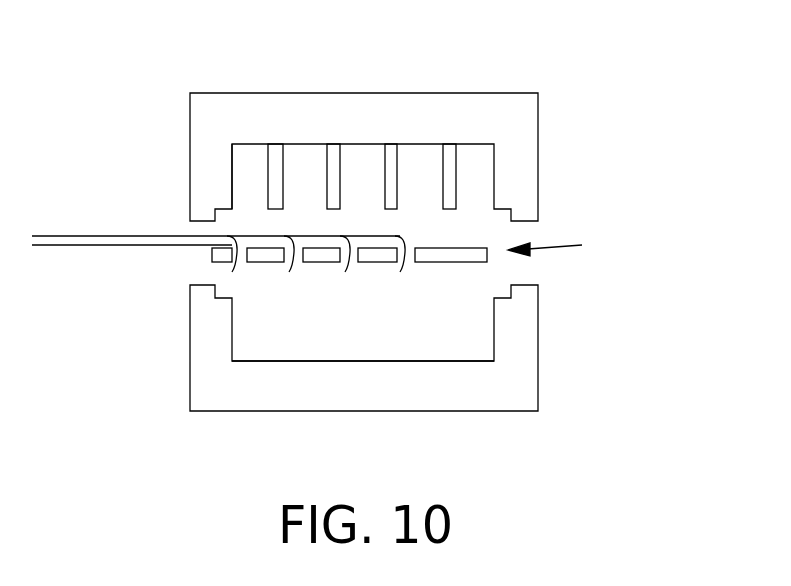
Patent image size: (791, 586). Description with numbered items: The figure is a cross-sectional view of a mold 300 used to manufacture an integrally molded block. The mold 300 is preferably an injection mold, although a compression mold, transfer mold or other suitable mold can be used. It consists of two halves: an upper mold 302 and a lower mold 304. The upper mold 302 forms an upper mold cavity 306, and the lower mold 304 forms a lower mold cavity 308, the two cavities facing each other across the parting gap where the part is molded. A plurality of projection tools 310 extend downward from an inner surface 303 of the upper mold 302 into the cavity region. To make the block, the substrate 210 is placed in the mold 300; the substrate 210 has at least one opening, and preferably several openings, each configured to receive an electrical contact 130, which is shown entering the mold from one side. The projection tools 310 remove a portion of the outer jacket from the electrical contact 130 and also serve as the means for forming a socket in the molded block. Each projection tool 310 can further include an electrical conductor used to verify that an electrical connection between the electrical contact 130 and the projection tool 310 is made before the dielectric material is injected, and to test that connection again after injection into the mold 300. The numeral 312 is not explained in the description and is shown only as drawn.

The mold 300 is at (562, 78).
The upper mold 302 is at (538, 157).
The lower mold 304 is at (538, 335).
The inner surface 303 is at (362, 143).
The upper mold cavity 306 is at (478, 160).
The lower mold cavity 308 is at (413, 337).
The projection tool 310 is at (265, 143).
The inner wall 312 is at (268, 182).
The substrate 210 is at (568, 242).
The electrical contact 130 is at (72, 246).